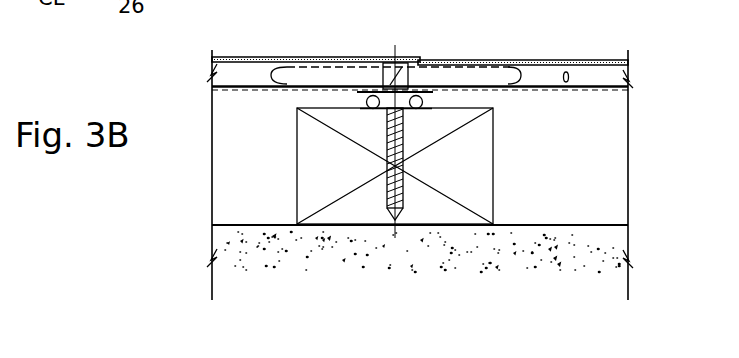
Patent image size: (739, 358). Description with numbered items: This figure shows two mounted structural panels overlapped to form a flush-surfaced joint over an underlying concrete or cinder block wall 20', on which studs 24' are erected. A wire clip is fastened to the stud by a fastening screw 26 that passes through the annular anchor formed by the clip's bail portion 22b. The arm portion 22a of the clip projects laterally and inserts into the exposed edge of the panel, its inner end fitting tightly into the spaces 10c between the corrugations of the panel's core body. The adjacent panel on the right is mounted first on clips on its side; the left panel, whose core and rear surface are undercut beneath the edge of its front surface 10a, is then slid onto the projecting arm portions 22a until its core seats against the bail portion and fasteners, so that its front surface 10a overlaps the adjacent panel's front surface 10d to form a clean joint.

The roofing panel 10a is at (456, 60).
The lower panel layer 10c is at (576, 91).
The adjacent roofing panel 10d is at (318, 56).
The sealing gasket 22a is at (543, 63).
The clip 22b is at (440, 108).
The insulation block 24' is at (428, 166).
The fastener screw 26 is at (385, 131).
The roof deck substrate 20' is at (422, 267).